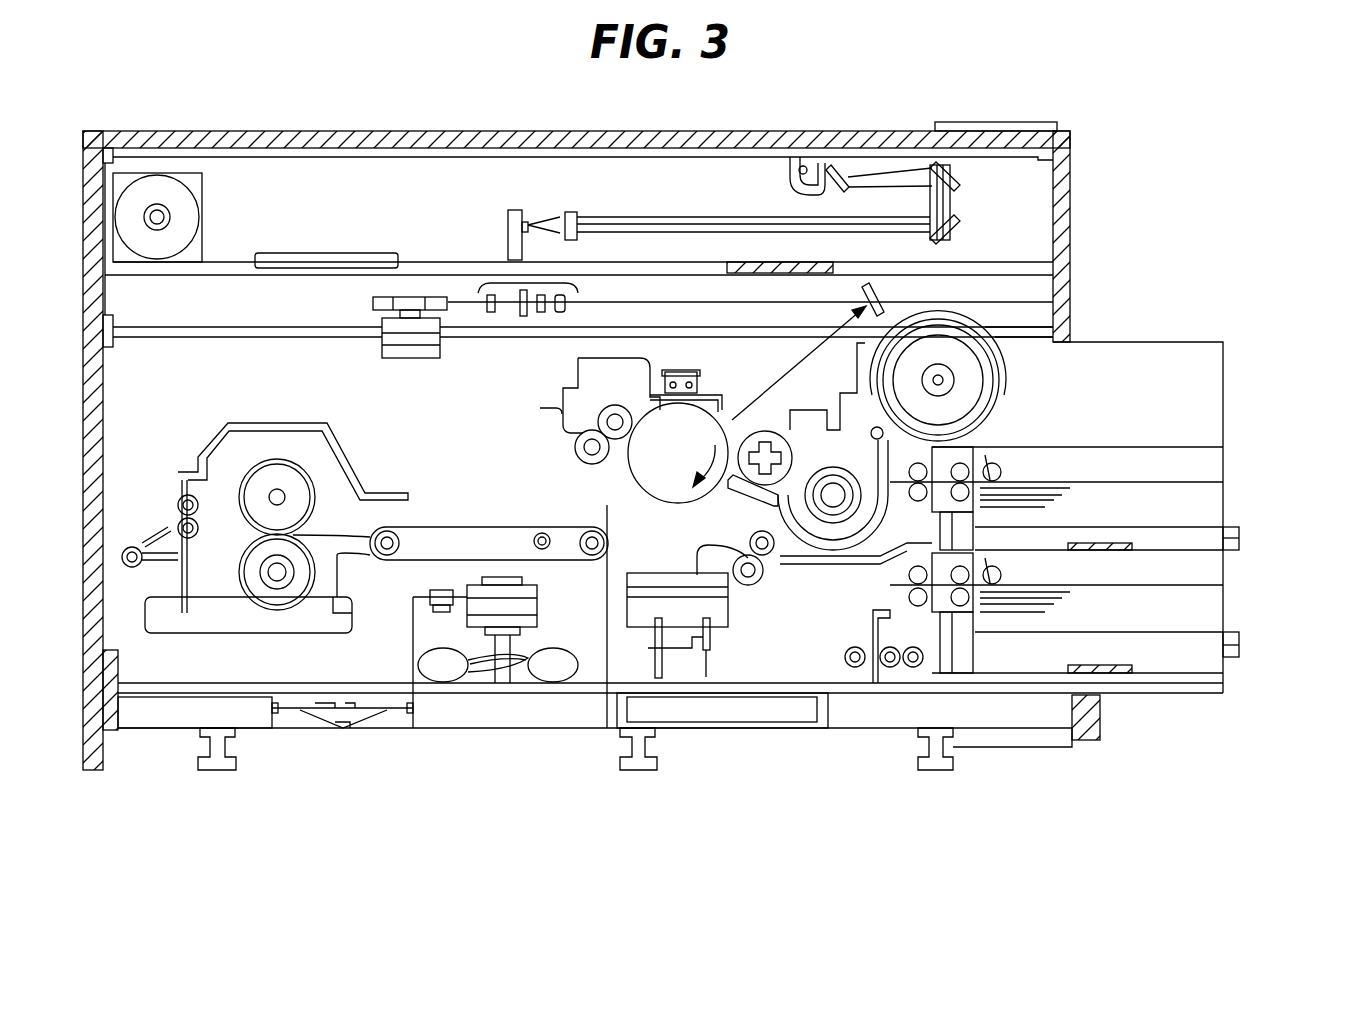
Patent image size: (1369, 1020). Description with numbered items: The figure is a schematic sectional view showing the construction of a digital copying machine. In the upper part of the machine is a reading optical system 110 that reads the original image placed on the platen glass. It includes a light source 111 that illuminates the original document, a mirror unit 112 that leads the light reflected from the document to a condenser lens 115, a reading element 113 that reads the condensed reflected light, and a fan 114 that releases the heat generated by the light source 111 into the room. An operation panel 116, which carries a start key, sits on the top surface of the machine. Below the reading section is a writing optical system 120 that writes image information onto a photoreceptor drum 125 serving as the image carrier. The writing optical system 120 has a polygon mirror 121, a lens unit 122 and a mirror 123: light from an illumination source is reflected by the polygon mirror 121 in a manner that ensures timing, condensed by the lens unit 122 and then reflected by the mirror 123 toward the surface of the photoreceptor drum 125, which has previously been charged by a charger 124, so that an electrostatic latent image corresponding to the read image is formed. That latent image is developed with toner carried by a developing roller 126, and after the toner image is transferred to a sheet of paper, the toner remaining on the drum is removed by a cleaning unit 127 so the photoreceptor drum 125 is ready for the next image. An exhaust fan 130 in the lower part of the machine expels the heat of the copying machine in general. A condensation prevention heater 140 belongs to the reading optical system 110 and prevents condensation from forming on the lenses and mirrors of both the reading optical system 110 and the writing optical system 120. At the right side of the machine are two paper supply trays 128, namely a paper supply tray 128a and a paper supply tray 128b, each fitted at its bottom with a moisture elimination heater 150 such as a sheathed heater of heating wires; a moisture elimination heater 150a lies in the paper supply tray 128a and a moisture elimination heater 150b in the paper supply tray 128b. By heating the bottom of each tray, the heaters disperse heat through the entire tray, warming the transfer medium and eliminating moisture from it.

The reading optical system 110 is at (1092, 204).
The light source 111 is at (803, 163).
The mirror unit 112 is at (955, 205).
The reading element 113 is at (515, 208).
The fan 114 is at (127, 178).
The condenser lens 115 is at (571, 210).
The operation panel 116 is at (1036, 122).
The writing optical system 120 is at (1095, 289).
The polygon mirror 121 is at (380, 320).
The lens unit 122 is at (505, 282).
The mirror 123 is at (880, 292).
The charger 124 is at (683, 368).
The photoreceptor drum 125 is at (647, 517).
The developing roller 126 is at (737, 488).
The cleaning unit 127 is at (562, 405).
The paper supply trays 128 is at (1129, 560).
The paper supply tray 128a is at (1225, 510).
The paper supply tray 128b is at (1105, 613).
The exhaust fan 130 is at (442, 672).
The condensation prevention heater 140 is at (760, 260).
The moisture elimination heaters 150 is at (1098, 690).
The moisture elimination heater 150a is at (1105, 557).
The moisture elimination heater 150b is at (1073, 719).